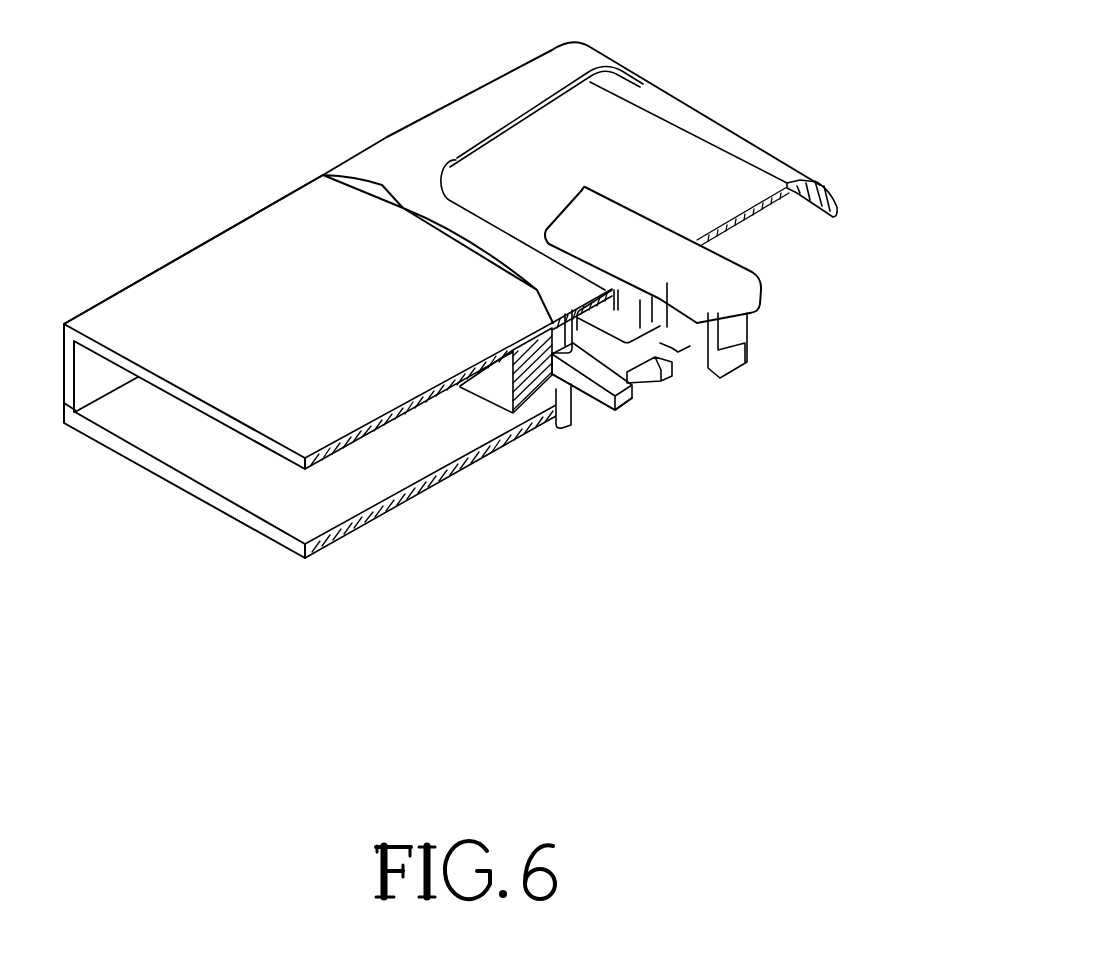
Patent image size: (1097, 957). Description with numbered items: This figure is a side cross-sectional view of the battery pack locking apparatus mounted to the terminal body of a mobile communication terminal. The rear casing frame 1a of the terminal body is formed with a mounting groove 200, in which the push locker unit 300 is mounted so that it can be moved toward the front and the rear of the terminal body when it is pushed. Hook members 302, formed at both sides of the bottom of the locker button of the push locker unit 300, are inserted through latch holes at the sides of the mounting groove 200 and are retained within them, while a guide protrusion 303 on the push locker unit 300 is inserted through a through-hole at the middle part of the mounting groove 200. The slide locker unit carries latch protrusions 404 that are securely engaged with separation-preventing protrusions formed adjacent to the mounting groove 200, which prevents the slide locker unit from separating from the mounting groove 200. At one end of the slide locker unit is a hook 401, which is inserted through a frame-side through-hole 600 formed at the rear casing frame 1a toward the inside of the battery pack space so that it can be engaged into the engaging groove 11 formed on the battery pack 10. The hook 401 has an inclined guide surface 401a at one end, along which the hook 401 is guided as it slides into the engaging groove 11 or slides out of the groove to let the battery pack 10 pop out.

The battery pack 10 is at (180, 244).
The engaging groove 11 is at (323, 175).
The rear casing frame 1a is at (633, 130).
The mounting groove 200 is at (546, 243).
The push locker unit 300 is at (766, 278).
The hook members 302 is at (735, 333).
The guide protrusion 303 is at (678, 352).
The hook 401 is at (622, 405).
The guide surface 401a is at (608, 398).
The latch protrusions 404 is at (663, 378).
The frame-side through-hole 600 is at (515, 370).